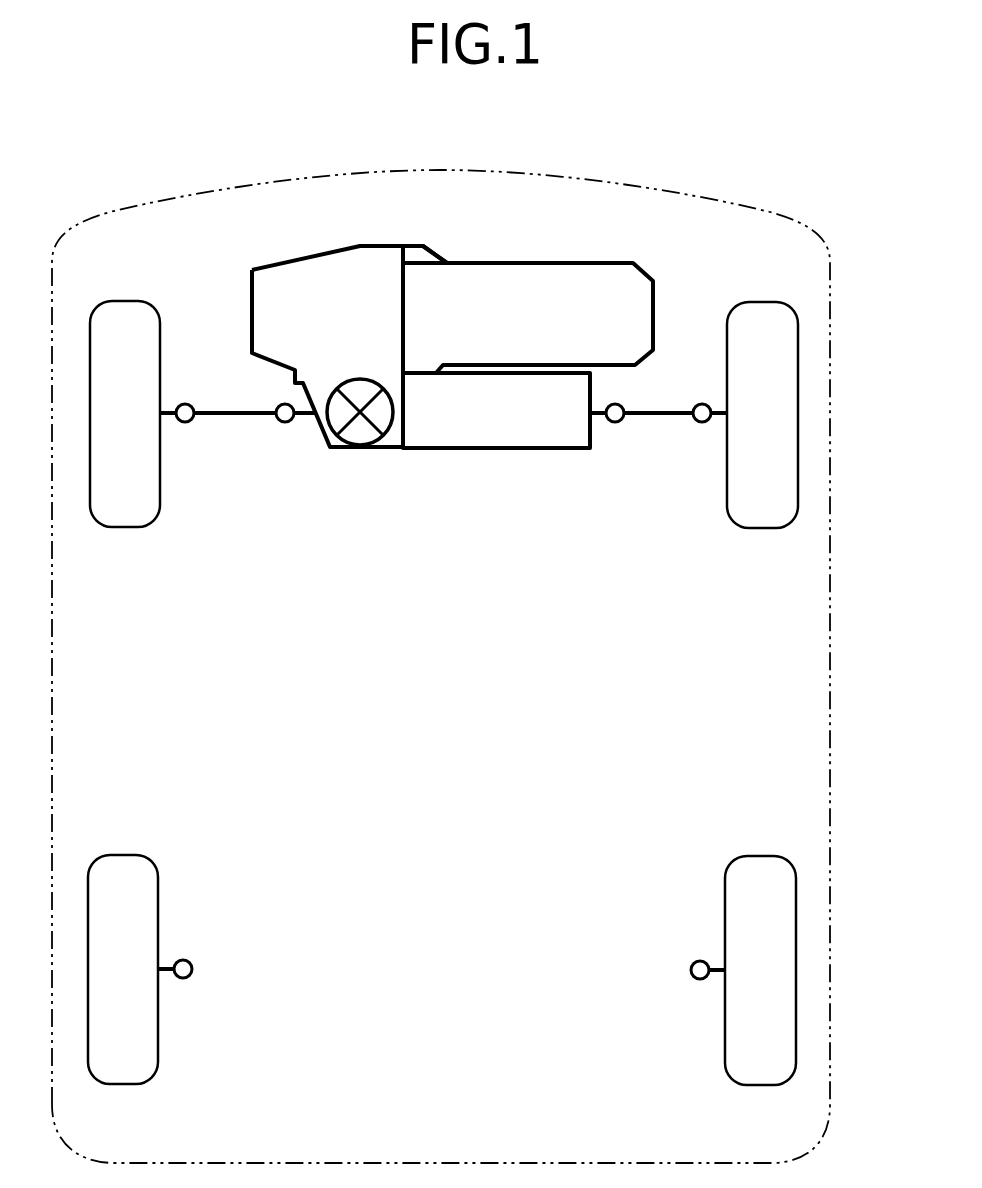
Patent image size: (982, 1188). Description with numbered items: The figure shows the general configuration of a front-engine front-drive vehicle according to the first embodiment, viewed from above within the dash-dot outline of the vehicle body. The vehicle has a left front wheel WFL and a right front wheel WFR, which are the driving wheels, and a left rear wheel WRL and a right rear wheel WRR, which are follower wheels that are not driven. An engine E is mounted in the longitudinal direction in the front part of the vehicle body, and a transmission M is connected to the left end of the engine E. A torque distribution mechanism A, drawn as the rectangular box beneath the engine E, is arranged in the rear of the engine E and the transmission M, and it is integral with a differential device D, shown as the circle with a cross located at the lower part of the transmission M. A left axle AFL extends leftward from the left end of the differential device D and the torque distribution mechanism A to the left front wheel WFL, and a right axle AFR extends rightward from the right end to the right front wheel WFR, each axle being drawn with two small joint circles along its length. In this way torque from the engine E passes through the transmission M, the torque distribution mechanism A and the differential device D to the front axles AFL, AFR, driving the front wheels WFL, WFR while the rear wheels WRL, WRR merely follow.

The transmission M is at (353, 327).
The engine E is at (558, 318).
The torque distribution mechanism A is at (513, 424).
The differential device D is at (357, 432).
The left axle AFL is at (232, 412).
The right axle AFR is at (687, 380).
The left front wheel WFL is at (115, 507).
The right front wheel WFR is at (763, 508).
The left rear wheel WRL is at (118, 875).
The right rear wheel WRR is at (759, 878).